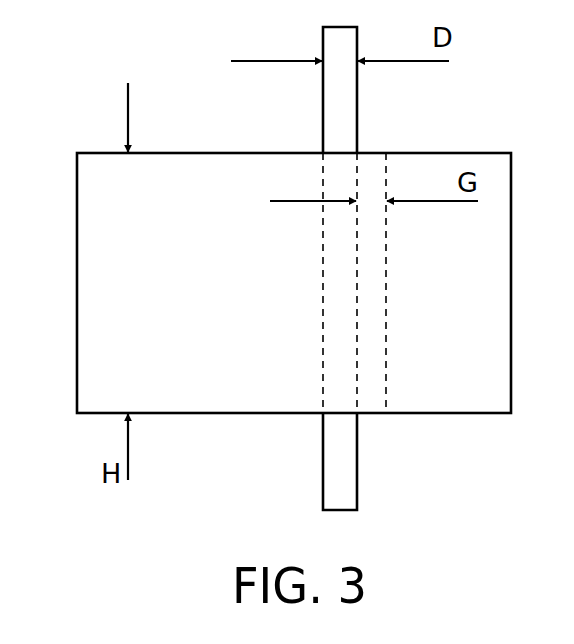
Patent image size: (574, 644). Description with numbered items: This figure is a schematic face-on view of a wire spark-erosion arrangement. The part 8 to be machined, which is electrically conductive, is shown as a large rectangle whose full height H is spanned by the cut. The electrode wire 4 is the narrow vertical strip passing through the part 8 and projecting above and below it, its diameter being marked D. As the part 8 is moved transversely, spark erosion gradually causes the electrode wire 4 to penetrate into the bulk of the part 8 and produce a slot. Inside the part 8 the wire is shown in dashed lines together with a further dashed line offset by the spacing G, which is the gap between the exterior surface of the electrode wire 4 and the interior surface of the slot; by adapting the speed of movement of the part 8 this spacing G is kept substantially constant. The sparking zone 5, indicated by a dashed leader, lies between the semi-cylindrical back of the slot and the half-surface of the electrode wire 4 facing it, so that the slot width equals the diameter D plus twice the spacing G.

The part to be machined 8 is at (96, 268).
The electrode wire 4 is at (340, 475).
The sparking zone 5 is at (373, 167).